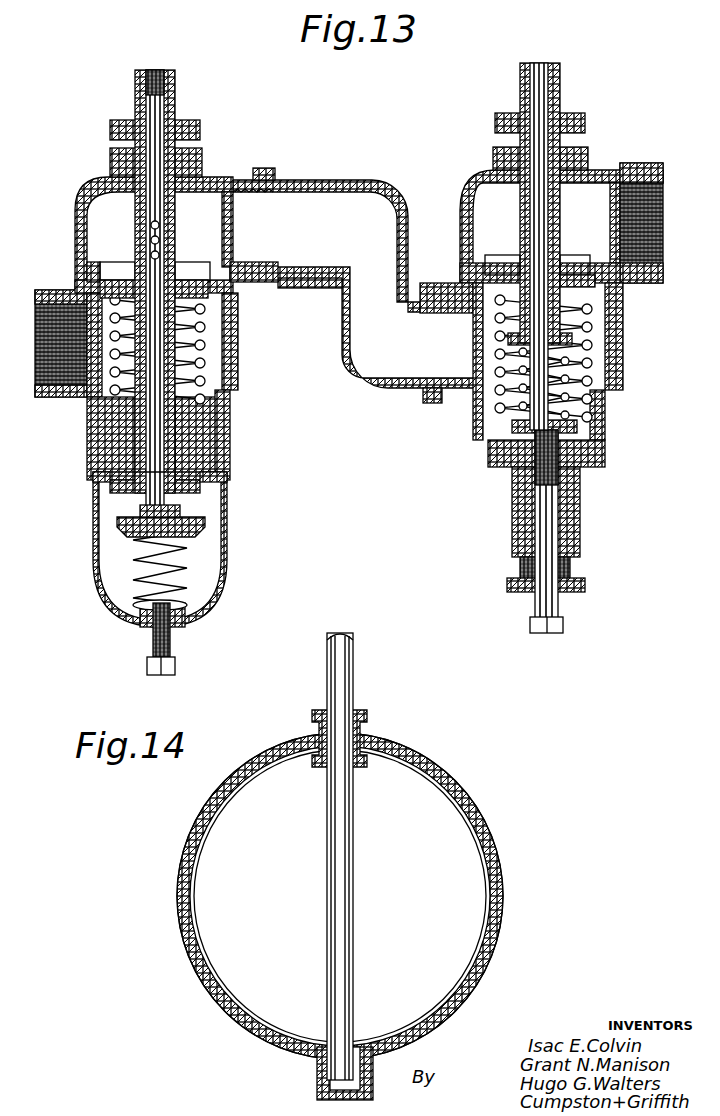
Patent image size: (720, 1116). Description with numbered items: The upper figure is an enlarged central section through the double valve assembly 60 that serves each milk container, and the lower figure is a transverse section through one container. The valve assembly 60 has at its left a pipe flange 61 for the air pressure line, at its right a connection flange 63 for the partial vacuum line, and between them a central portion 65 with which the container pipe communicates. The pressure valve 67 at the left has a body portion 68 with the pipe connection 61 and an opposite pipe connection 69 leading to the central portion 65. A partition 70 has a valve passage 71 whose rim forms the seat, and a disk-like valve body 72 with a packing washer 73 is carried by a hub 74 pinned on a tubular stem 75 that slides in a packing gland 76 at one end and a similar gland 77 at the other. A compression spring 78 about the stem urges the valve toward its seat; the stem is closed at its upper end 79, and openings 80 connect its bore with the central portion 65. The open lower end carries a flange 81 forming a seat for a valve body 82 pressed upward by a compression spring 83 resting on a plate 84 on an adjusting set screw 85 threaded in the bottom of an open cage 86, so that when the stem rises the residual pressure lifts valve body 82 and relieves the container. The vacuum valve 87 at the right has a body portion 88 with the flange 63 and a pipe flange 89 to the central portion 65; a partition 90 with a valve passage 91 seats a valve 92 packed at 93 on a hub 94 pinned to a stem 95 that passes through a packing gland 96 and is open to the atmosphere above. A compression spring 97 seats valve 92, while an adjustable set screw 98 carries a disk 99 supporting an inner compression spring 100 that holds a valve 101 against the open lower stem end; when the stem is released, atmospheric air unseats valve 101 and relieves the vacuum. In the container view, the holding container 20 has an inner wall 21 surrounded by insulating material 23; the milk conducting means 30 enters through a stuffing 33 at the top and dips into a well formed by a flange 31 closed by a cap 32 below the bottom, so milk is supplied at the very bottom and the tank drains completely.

In FIG. 13, the valve assembly 60 is at (365, 180).
In FIG. 13, the pipe flange 61 is at (62, 398).
In FIG. 13, the connection flange 63 is at (648, 166).
In FIG. 13, the central portion 65 is at (345, 250).
In FIG. 13, the pressure valve 67 is at (82, 198).
In FIG. 13, the body portion 68 is at (75, 232).
In FIG. 13, the pipe connection 69 is at (265, 168).
In FIG. 13, the partition 70 is at (88, 265).
In FIG. 13, the valve passage 71 is at (122, 266).
In FIG. 13, the valve body 72 is at (198, 291).
In FIG. 13, the packing washer 73 is at (188, 280).
In FIG. 13, the hub 74 is at (184, 268).
In FIG. 13, the tubular stem 75 is at (176, 110).
In FIG. 13, the packing gland 76 is at (203, 170).
In FIG. 13, the packing gland 77 is at (128, 440).
In FIG. 13, the compression spring 78 is at (208, 345).
In FIG. 13, the closed upper end 79 is at (162, 72).
In FIG. 13, the openings 80 is at (150, 228).
In FIG. 13, the flange 81 is at (182, 510).
In FIG. 13, the valve body 82 is at (205, 527).
In FIG. 13, the compression spring 83 is at (187, 560).
In FIG. 13, the plate 84 is at (187, 606).
In FIG. 13, the adjusting set screw 85 is at (172, 642).
In FIG. 13, the open cage 86 is at (97, 590).
In FIG. 13, the vacuum valve 87 is at (482, 190).
In FIG. 13, the body portion 88 is at (466, 230).
In FIG. 13, the pipe flange 89 is at (430, 403).
In FIG. 13, the partition 90 is at (473, 268).
In FIG. 13, the valve passage 91 is at (512, 262).
In FIG. 13, the valve 92 is at (624, 285).
In FIG. 13, the packing 93 is at (577, 274).
In FIG. 13, the hub 94 is at (566, 258).
In FIG. 13, the stem 95 is at (561, 100).
In FIG. 13, the packing gland 96 is at (590, 160).
In FIG. 13, the compression spring 97 is at (592, 330).
In FIG. 13, the adjustable set screw 98 is at (548, 505).
In FIG. 13, the disk 99 is at (530, 433).
In FIG. 13, the inner compression spring 100 is at (600, 375).
In FIG. 13, the valve 101 is at (576, 348).
In FIG. 14, the holding container 20 is at (503, 880).
In FIG. 14, the inner wall 21 is at (488, 895).
In FIG. 14, the insulating material 23 is at (500, 932).
In FIG. 14, the milk conducting means 30 is at (354, 676).
In FIG. 14, the flange 31 is at (330, 1070).
In FIG. 14, the cap 32 is at (318, 1091).
In FIG. 14, the stuffing 33 is at (368, 730).